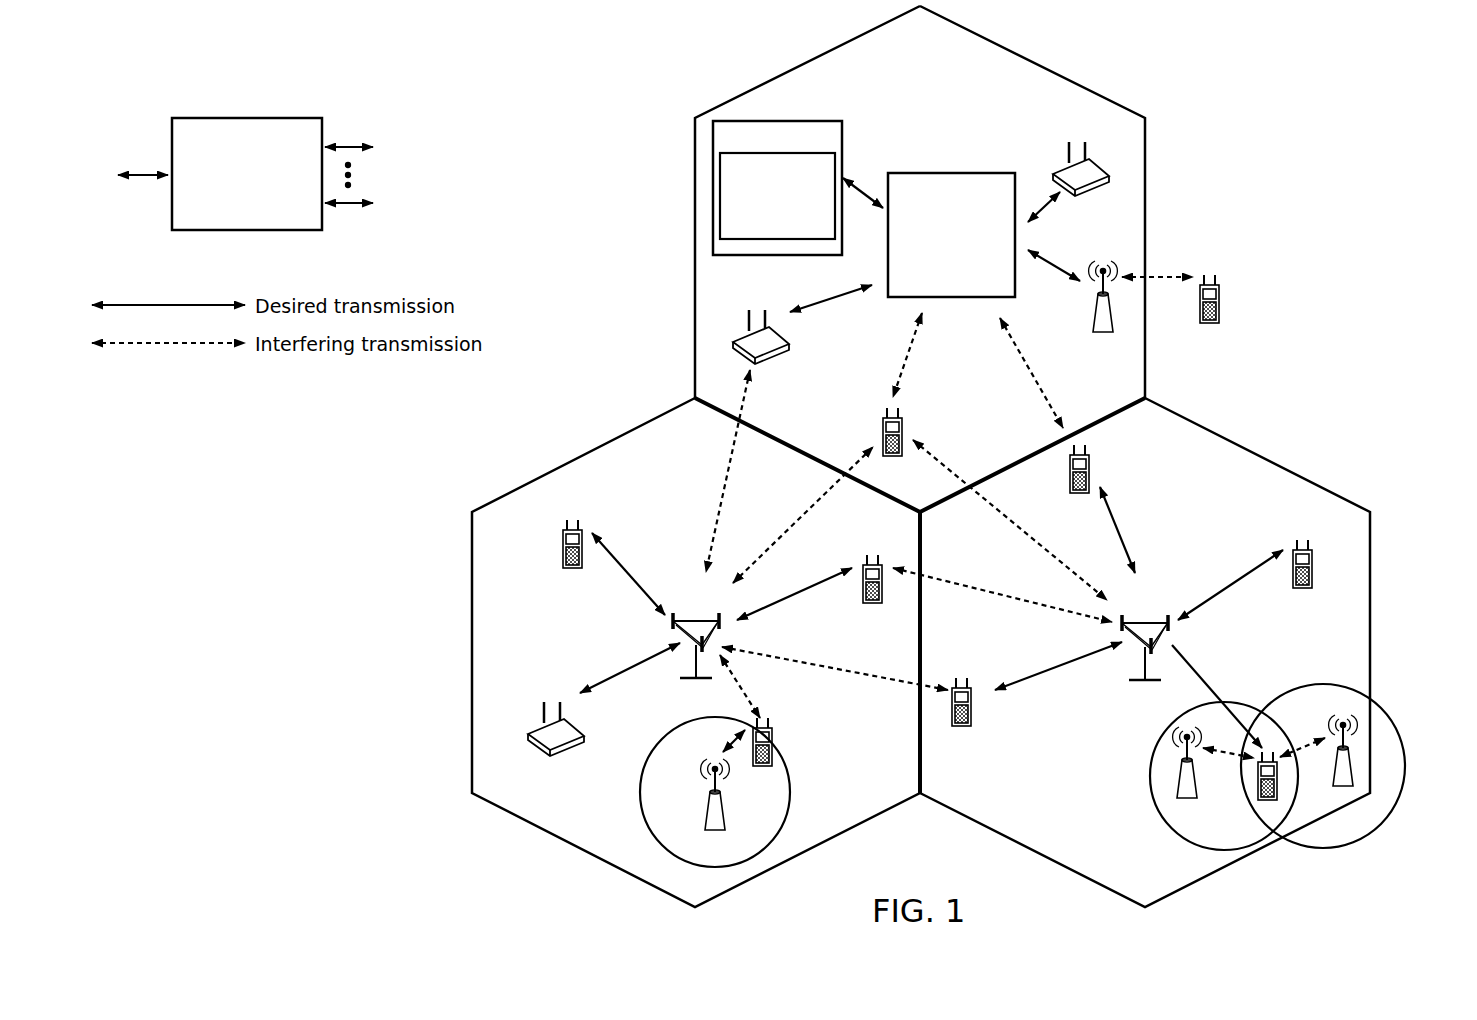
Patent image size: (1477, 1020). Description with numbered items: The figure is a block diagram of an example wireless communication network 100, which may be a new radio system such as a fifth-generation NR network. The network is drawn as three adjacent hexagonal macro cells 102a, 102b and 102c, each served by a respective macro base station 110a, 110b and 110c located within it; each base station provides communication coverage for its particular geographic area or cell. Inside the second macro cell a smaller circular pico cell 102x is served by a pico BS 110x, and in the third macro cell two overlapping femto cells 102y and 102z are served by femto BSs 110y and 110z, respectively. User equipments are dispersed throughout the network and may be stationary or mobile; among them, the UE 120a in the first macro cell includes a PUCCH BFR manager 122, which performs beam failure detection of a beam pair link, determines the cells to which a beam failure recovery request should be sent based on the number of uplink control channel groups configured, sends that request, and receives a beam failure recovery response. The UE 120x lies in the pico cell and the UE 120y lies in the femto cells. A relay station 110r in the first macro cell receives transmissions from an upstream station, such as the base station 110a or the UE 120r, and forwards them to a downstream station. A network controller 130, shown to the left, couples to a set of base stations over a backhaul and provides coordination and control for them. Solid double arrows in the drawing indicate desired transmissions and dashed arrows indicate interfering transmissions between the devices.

The wireless communication network 100 is at (1300, 78).
The macro cell 102a is at (1028, 62).
The macro cell 102b is at (584, 454).
The macro cell 102c is at (1258, 456).
The pico cell 102x is at (665, 738).
The femto cell 102y is at (1155, 745).
The femto cell 102z is at (1318, 680).
The base station 110a is at (990, 172).
The base station 110b is at (690, 618).
The base station 110c is at (1142, 618).
The relay station 110r is at (1093, 320).
The pico BS 110x is at (726, 816).
The femto BS 110y is at (1196, 795).
The femto BS 110z is at (1351, 782).
The UE 120a is at (800, 172).
The UE 120r is at (1220, 312).
The UE 120x is at (774, 735).
The UE 120y is at (1258, 795).
The PUCCH BFR manager 122 is at (838, 162).
The network controller 130 is at (242, 118).